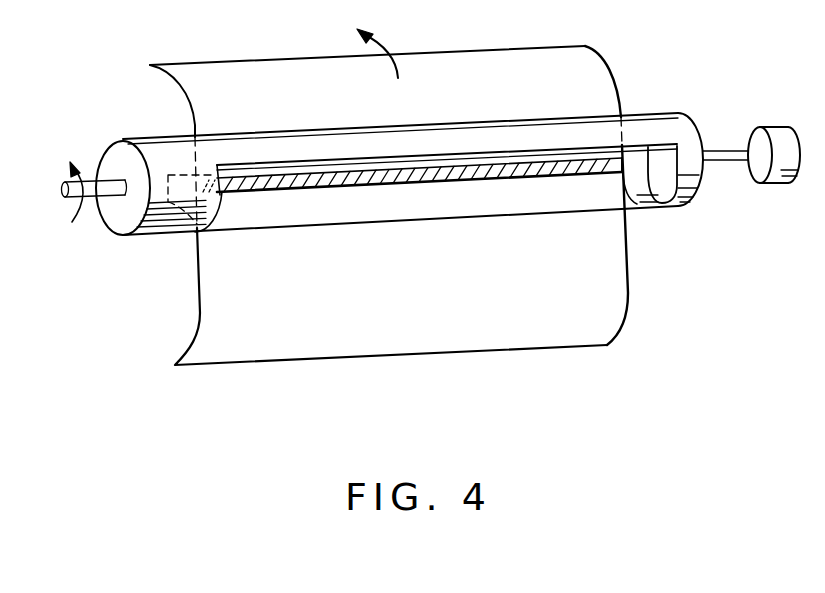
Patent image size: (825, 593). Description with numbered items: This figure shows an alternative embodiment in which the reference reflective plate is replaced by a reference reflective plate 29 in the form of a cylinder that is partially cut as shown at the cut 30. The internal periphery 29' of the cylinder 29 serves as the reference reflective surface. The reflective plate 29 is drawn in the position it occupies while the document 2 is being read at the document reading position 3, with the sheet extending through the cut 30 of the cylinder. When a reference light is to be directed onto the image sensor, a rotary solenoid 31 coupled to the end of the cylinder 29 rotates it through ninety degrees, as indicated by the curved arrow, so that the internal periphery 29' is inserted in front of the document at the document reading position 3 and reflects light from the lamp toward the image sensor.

The sheet 2 is at (582, 65).
The document reading position 3 is at (585, 175).
The reference reflective plate 29 is at (400, 182).
The internal periphery 29' is at (527, 196).
The cut 30 is at (580, 148).
The rotary solenoid 31 is at (778, 132).